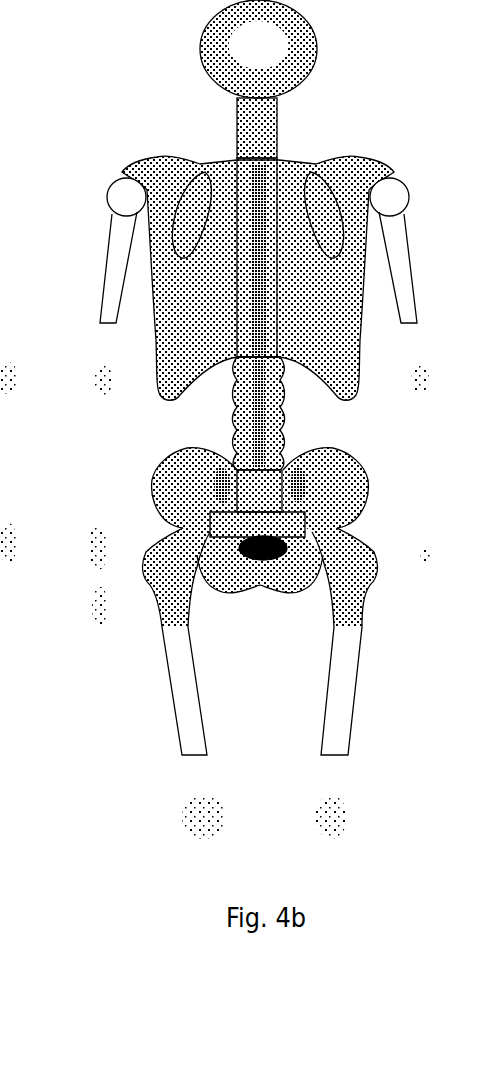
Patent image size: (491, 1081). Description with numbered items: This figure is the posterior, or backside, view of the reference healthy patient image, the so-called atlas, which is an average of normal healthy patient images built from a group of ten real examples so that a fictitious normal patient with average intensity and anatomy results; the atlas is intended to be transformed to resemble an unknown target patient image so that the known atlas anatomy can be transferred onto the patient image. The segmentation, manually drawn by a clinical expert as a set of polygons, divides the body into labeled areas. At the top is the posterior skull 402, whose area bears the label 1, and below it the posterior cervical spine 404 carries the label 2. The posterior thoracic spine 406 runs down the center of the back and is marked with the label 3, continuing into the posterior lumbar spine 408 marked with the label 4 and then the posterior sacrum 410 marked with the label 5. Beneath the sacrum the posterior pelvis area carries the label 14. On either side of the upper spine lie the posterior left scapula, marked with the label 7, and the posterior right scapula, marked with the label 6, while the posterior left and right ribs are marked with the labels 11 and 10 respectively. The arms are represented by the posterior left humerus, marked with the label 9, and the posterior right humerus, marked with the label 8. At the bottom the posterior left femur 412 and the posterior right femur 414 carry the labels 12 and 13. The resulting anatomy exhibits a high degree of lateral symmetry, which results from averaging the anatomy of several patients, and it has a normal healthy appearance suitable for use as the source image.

The posterior skull 402 is at (172, 49).
The posterior cervical spine 404 is at (165, 128).
The posterior thoracic spine 406 is at (154, 258).
The posterior lumbar spine 408 is at (170, 413).
The posterior sacrum 410 is at (168, 483).
The posterior left femur 412 is at (138, 691).
The posterior right femur 414 is at (288, 691).
The posterior skull label 1 is at (258, 49).
The posterior cervical spine label 2 is at (257, 128).
The posterior thoracic spine label 3 is at (257, 257).
The posterior lumbar spine label 4 is at (259, 413).
The posterior sacrum label 5 is at (259, 491).
The posterior right scapula label 6 is at (329, 215).
The posterior left scapula label 7 is at (181, 215).
The posterior right humerus label 8 is at (393, 250).
The posterior left humerus label 9 is at (123, 250).
The posterior right ribs label 10 is at (327, 270).
The posterior left ribs label 11 is at (258, 278).
The posterior left femur label 12 is at (183, 691).
The posterior right femur label 13 is at (341, 691).
The posterior pelvis label 14 is at (260, 537).